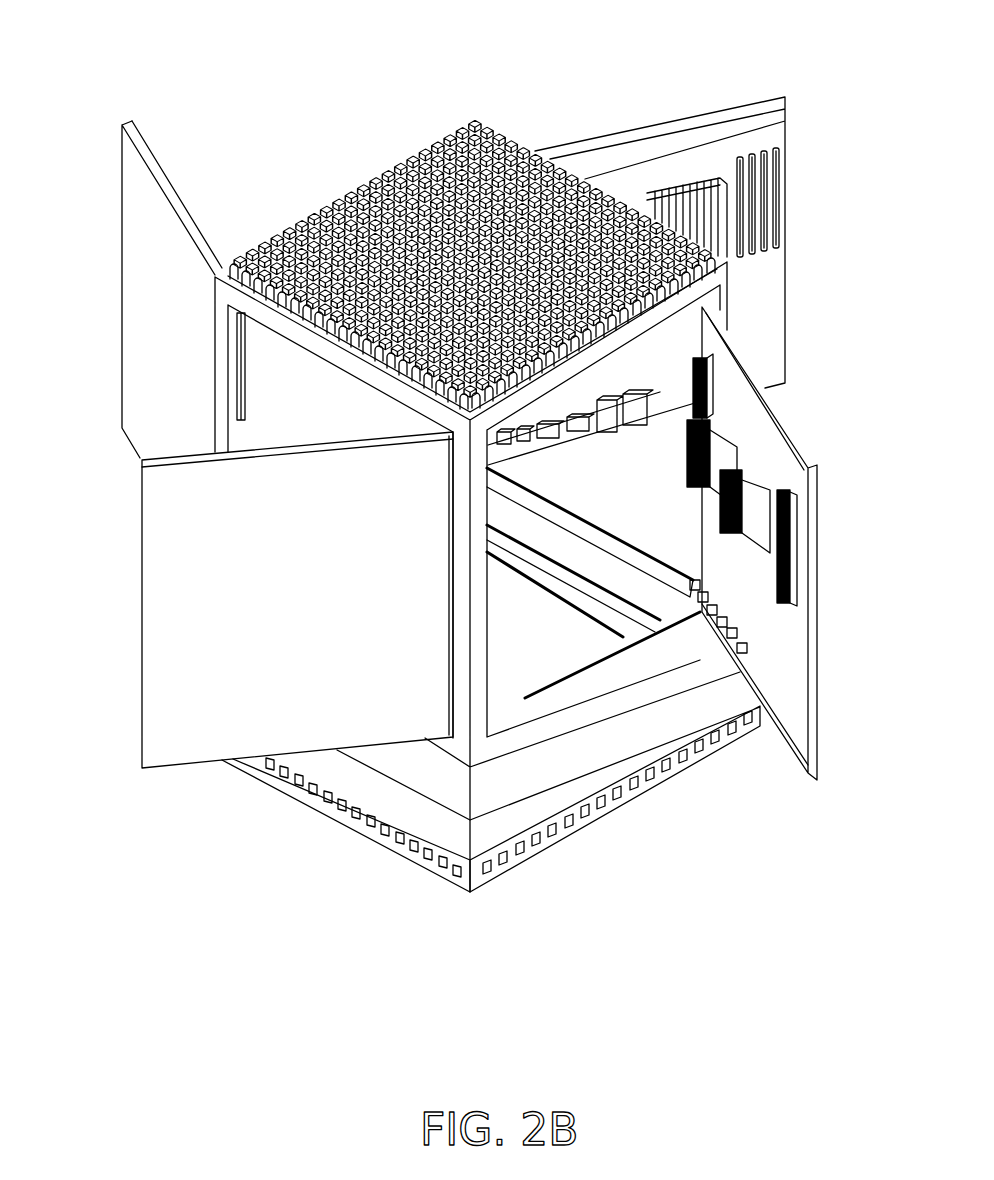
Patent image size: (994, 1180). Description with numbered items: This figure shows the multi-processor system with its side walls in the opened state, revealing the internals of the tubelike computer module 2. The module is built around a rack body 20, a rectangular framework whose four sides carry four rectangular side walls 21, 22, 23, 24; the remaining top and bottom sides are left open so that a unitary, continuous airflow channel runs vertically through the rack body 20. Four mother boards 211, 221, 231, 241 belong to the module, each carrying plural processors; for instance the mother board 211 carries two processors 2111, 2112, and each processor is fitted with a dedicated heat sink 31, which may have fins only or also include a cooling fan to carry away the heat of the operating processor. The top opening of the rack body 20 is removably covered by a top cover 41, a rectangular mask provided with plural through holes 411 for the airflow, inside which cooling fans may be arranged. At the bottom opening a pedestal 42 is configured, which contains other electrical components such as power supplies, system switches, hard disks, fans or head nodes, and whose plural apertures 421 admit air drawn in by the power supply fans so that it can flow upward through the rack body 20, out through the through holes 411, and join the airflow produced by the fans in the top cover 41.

The tubelike computer module 2 is at (848, 477).
The rack body 20 is at (483, 621).
The side wall 21 is at (811, 551).
The mother board 211 is at (797, 680).
The processor 2111 is at (740, 440).
The processor 2112 is at (768, 483).
The side wall 22 is at (703, 225).
The mother board 221 is at (775, 322).
The side wall 23 is at (140, 289).
The mother board 231 is at (178, 193).
The side wall 24 is at (246, 600).
The mother board 241 is at (140, 518).
The heat sink 31 is at (743, 545).
The top cover 41 is at (472, 216).
The through holes 411 is at (398, 165).
The pedestal 42 is at (491, 817).
The apertures 421 is at (437, 880).